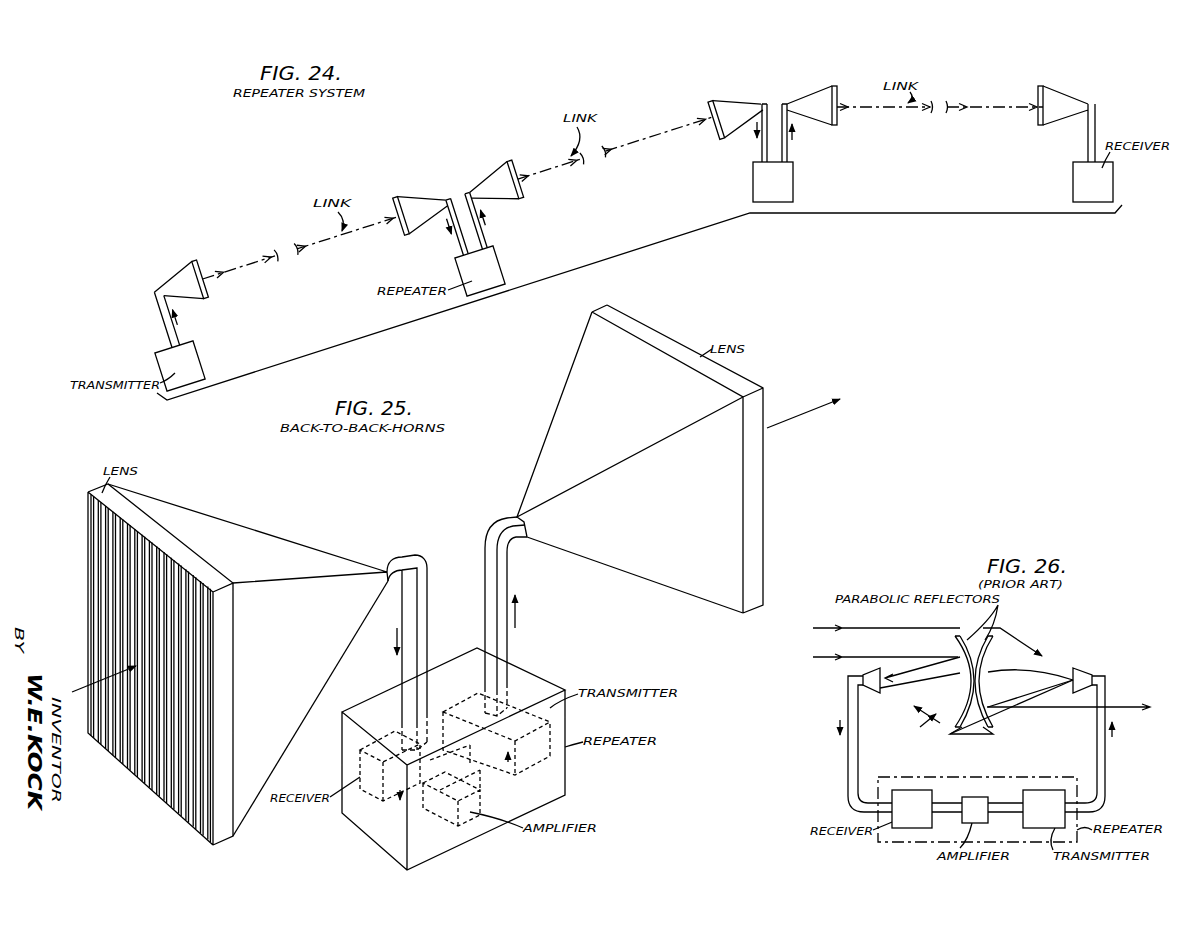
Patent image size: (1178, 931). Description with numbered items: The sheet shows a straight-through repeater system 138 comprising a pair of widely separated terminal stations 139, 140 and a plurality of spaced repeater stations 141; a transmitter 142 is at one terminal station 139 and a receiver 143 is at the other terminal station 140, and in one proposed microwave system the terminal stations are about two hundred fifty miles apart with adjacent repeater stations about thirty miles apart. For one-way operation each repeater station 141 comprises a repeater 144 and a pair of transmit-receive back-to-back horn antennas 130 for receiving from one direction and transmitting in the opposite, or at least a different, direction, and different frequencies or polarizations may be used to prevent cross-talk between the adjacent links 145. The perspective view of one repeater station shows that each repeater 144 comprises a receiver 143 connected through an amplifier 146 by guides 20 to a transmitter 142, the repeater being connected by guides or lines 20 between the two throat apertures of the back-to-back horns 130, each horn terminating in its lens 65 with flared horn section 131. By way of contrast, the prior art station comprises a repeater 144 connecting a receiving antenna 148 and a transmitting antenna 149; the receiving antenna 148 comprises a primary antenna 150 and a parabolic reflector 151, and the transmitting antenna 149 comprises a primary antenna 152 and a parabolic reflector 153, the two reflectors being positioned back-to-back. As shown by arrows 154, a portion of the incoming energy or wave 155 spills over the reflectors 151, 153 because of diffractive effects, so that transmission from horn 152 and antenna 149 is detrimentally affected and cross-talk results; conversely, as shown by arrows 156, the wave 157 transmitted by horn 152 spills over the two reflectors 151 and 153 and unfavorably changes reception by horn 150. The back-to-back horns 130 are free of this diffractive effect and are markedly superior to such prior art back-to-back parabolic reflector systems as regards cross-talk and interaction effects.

In FIG. 25, the guides 20 is at (417, 628).
In FIG. 26, the guides 20 is at (848, 785).
In FIG. 24, the lens 65 is at (201, 262).
In FIG. 25, the lens 65 is at (90, 500).
In FIG. 24, the back-to-back horn antenna 130 is at (184, 272).
In FIG. 25, the back-to-back horn antenna 130 is at (165, 518).
In FIG. 25, the horn flare section 131 is at (208, 514).
In FIG. 24, the straight-through repeater system 138 is at (750, 214).
In FIG. 24, the terminal station 139 is at (185, 322).
In FIG. 24, the terminal station 140 is at (1097, 142).
In FIG. 24, the repeater station 141 is at (615, 187).
In FIG. 25, the repeater station 141 is at (460, 693).
In FIG. 24, the transmitter 142 is at (188, 368).
In FIG. 25, the transmitter 142 is at (540, 723).
In FIG. 26, the transmitter 142 is at (1045, 800).
In FIG. 24, the receiver 143 is at (1103, 190).
In FIG. 25, the receiver 143 is at (373, 782).
In FIG. 26, the receiver 143 is at (912, 790).
In FIG. 24, the repeater 144 is at (490, 270).
In FIG. 25, the repeater 144 is at (460, 759).
In FIG. 26, the repeater 144 is at (980, 796).
In FIG. 24, the link 145 is at (315, 248).
In FIG. 25, the amplifier 146 is at (467, 812).
In FIG. 26, the amplifier 146 is at (975, 797).
In FIG. 26, the receiving antenna 148 is at (930, 676).
In FIG. 26, the transmitting antenna 149 is at (1030, 688).
In FIG. 26, the primary antenna 150 is at (862, 680).
In FIG. 26, the parabolic reflector 151 is at (960, 655).
In FIG. 26, the primary antenna 152 is at (1085, 672).
In FIG. 26, the parabolic reflector 153 is at (990, 663).
In FIG. 26, the arrows 154 is at (1023, 648).
In FIG. 26, the incoming energy or wave 155 is at (823, 657).
In FIG. 26, the arrows 156 is at (943, 722).
In FIG. 26, the transmitted wave 157 is at (1043, 690).